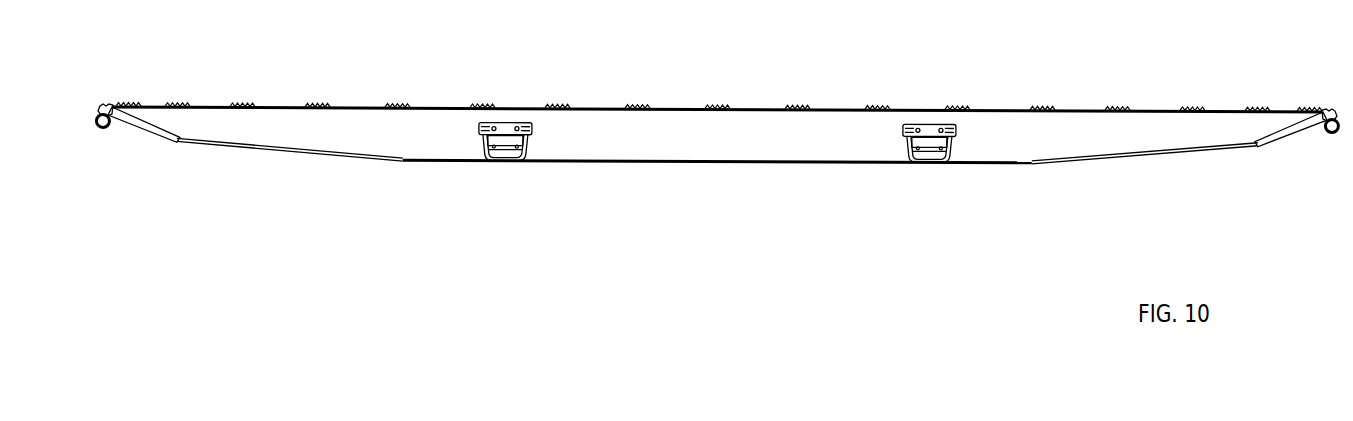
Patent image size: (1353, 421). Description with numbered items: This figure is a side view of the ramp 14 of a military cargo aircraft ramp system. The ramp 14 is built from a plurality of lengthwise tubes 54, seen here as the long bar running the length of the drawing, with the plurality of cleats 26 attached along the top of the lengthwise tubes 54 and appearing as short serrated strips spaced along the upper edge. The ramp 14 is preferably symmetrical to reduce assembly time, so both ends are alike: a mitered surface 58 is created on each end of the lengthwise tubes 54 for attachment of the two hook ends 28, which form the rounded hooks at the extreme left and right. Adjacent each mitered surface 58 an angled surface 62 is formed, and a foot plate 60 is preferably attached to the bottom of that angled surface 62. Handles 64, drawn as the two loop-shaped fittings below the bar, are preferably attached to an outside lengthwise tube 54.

The ramp 14 is at (490, 225).
The cleats 26 is at (487, 106).
The hook ends 28 is at (124, 132).
The lengthwise tubes 54 is at (700, 138).
The mitered surface 58 is at (172, 136).
The foot plate 60 is at (318, 152).
The angled surface 62 is at (350, 154).
The handles 64 is at (930, 148).